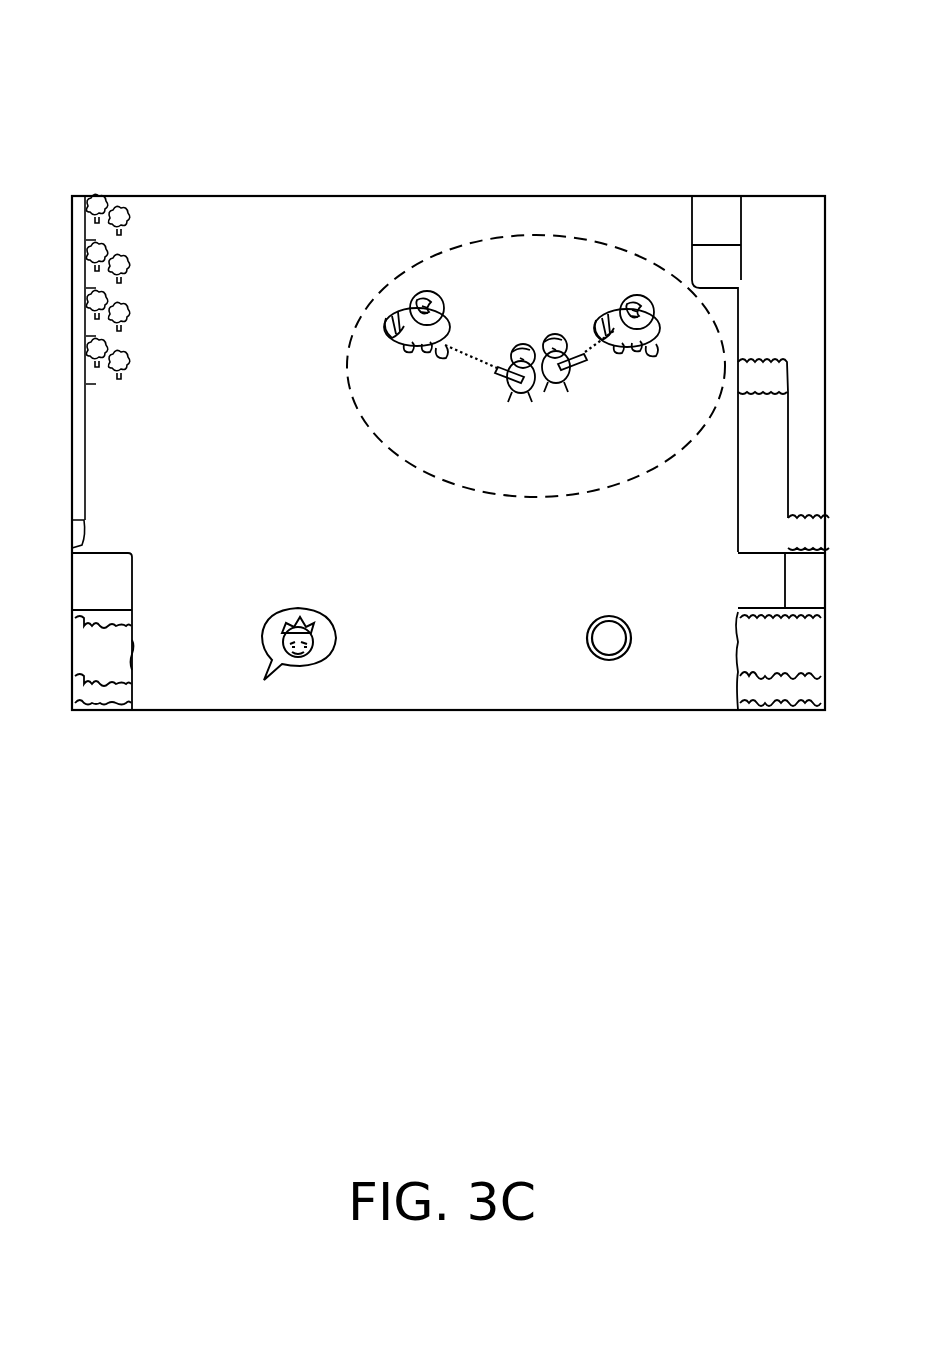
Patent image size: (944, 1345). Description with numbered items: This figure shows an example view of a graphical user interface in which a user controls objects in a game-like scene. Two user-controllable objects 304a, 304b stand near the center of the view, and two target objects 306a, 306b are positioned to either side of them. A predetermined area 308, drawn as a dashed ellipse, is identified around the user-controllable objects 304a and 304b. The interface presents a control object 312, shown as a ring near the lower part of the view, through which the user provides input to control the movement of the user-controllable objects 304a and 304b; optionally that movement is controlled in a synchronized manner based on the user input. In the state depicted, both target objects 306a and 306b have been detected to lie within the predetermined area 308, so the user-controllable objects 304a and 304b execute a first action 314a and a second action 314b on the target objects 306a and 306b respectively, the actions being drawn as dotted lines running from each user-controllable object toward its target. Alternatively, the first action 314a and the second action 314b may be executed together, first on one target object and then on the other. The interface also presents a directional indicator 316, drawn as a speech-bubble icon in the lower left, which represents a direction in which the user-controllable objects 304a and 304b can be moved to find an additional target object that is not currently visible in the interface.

The user-controllable object 304a is at (553, 335).
The user-controllable object 304b is at (522, 343).
The target object 306a is at (638, 297).
The target object 306b is at (413, 297).
The predetermined area 308 is at (452, 440).
The control object 312 is at (620, 652).
The first action 314a is at (587, 350).
The second action 314b is at (463, 350).
The directional indicator 316 is at (316, 663).